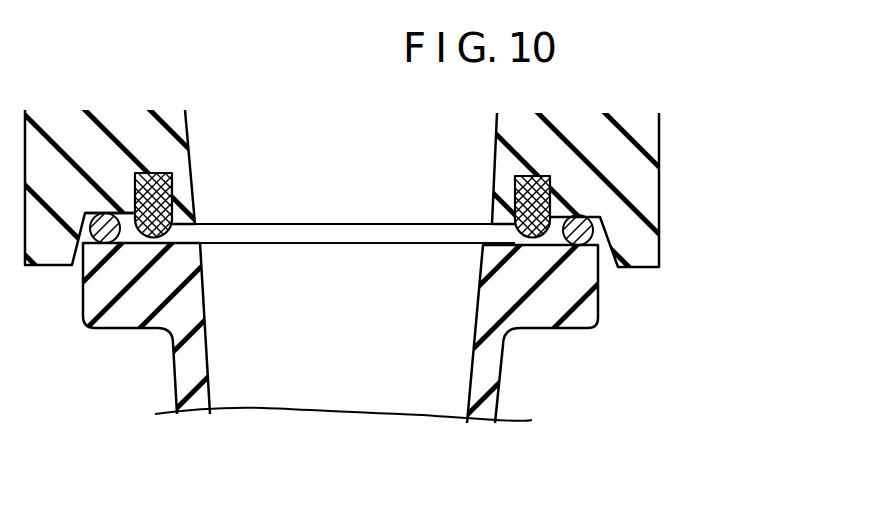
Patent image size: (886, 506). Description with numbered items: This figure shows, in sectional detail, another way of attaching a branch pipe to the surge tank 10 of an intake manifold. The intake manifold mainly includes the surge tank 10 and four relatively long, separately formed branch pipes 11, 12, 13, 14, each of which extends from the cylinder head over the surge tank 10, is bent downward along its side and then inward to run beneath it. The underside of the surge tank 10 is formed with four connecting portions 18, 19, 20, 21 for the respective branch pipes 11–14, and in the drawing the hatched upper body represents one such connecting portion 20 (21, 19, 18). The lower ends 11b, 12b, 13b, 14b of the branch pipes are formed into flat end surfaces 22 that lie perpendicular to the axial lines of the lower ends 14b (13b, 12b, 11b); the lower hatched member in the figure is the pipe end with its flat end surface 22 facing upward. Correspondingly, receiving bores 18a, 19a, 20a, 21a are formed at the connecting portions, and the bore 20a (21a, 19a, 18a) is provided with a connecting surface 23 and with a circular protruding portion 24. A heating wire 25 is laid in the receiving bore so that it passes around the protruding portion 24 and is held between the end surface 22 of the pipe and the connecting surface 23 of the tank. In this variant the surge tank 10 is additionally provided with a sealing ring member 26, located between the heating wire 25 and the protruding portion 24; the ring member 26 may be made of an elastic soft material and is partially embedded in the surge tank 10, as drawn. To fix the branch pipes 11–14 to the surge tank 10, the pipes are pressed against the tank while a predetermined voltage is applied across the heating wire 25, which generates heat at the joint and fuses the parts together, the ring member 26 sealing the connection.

The surge tank 10 is at (131, 103).
The connecting portion 20 is at (442, 228).
The connecting portion 21 is at (442, 228).
The connecting portion 19 is at (442, 228).
The connecting portion 18 is at (660, 205).
The receiving bore 20a is at (701, 235).
The receiving bore 21a is at (701, 235).
The receiving bore 19a is at (701, 235).
The receiving bore 18a is at (606, 268).
The branch pipe 14 is at (408, 347).
The branch pipe 13 is at (408, 347).
The branch pipe 12 is at (408, 347).
The branch pipe 11 is at (257, 417).
The lower end of branch pipe 14b is at (642, 334).
The lower end of branch pipe 13b is at (642, 334).
The lower end of branch pipe 12b is at (642, 334).
The lower end of branch pipe 11b is at (608, 320).
The flat end surface 22 is at (193, 243).
The connecting surface 23 is at (125, 216).
The circular protruding portion 24 is at (182, 226).
The heating wire 25 is at (93, 216).
The sealing ring member 26 is at (515, 187).